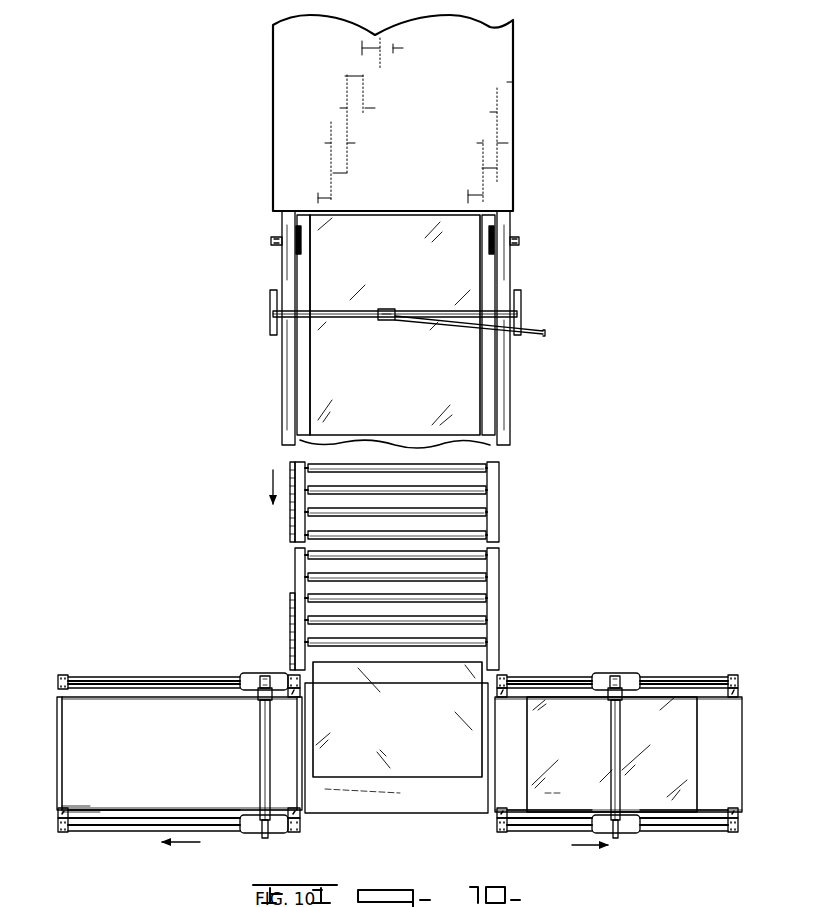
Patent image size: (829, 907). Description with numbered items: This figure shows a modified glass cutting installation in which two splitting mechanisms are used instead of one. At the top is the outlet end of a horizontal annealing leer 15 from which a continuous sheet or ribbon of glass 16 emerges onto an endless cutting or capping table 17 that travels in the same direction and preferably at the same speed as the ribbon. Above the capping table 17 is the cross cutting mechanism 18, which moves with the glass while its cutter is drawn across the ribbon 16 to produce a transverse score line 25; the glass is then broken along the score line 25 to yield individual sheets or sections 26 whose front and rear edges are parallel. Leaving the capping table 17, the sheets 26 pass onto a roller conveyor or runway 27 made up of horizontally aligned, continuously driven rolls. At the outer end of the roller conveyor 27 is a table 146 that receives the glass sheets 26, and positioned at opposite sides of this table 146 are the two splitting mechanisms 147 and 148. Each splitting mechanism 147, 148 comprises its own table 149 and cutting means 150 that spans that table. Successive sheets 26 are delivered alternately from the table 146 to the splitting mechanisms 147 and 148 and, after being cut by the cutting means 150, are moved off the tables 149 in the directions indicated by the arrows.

The outlet end of horizontal annealing leer 15 is at (501, 66).
The continuous sheet or ribbon of glass 16 is at (312, 270).
The endless cutting or capping table 17 is at (487, 405).
The cross cutting mechanism 18 is at (370, 301).
The score line 25 is at (358, 320).
The individual glass sheets or sections 26 is at (318, 401).
The roller conveyor or runway 27 is at (505, 571).
The table 146 is at (436, 800).
The splitting mechanism 147 is at (158, 675).
The splitting mechanism 148 is at (580, 672).
The table 149 is at (98, 796).
The cutting means 150 is at (256, 757).